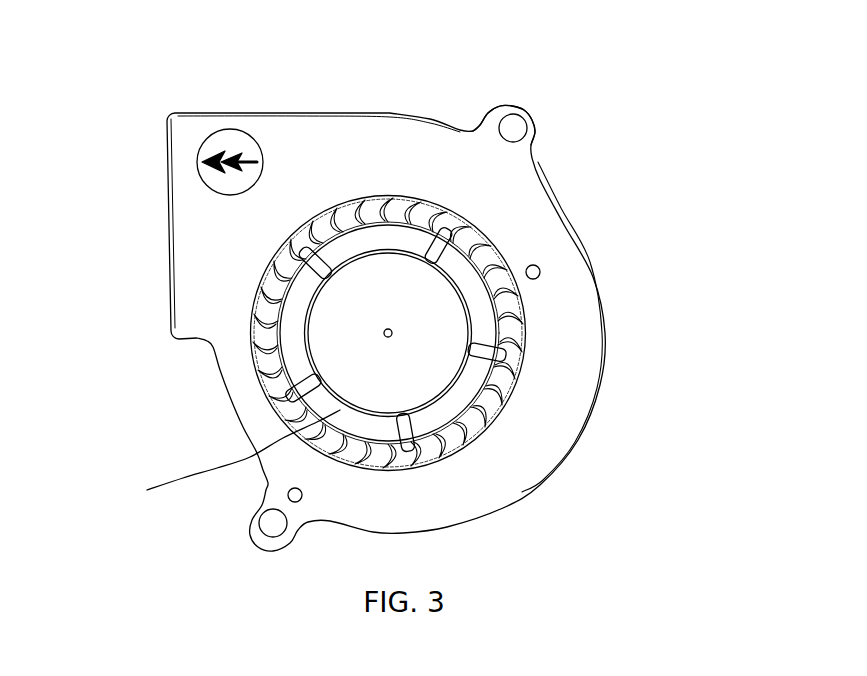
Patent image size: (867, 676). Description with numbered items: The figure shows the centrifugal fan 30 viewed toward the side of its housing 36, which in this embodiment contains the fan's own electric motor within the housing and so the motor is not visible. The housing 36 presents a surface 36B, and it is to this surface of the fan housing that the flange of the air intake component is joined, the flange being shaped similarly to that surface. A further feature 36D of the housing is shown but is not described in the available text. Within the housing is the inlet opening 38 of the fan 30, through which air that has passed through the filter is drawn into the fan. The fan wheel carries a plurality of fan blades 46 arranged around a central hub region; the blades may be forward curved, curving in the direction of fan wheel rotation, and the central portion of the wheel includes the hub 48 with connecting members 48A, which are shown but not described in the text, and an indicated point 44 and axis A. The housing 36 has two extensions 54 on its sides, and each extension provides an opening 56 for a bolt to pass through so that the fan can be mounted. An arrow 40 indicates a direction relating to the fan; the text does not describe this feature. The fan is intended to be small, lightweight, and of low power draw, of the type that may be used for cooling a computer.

The centrifugal fan 30 is at (615, 185).
The housing 36 is at (360, 142).
The surface of the fan housing 36B is at (553, 423).
The housing inlet opening 36D is at (530, 325).
The inlet opening 38 is at (481, 422).
The air outlet 40 is at (150, 236).
The hub 44 is at (331, 317).
The fan blades 46 is at (340, 412).
The impeller 48 is at (352, 353).
The struts 48A is at (520, 282).
The extensions 54 is at (533, 139).
The openings 56 is at (514, 128).
The axis of rotation A is at (392, 333).